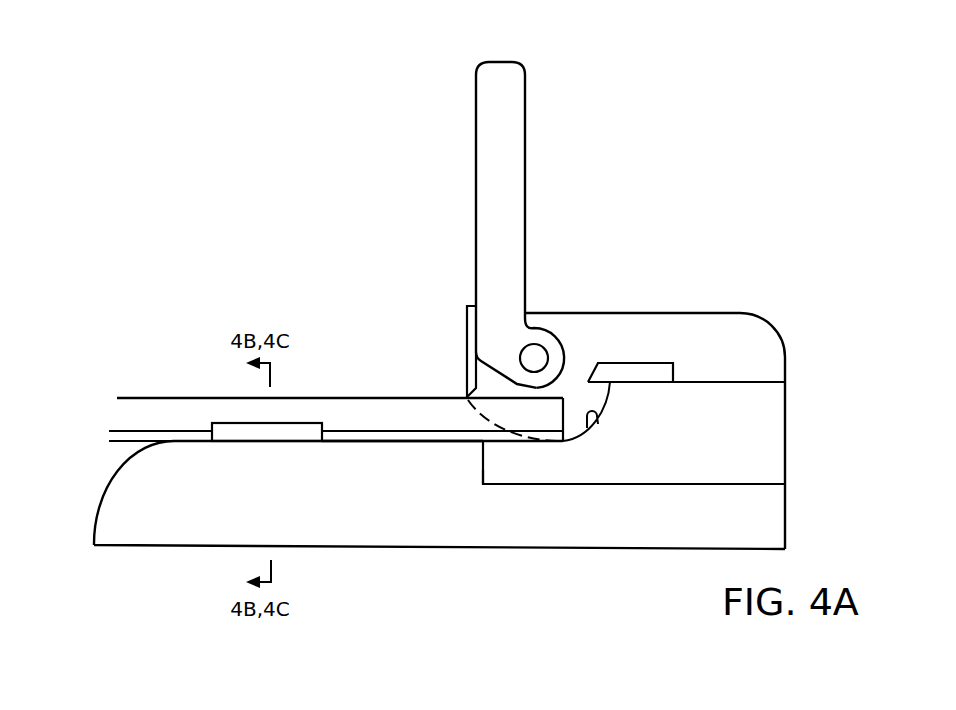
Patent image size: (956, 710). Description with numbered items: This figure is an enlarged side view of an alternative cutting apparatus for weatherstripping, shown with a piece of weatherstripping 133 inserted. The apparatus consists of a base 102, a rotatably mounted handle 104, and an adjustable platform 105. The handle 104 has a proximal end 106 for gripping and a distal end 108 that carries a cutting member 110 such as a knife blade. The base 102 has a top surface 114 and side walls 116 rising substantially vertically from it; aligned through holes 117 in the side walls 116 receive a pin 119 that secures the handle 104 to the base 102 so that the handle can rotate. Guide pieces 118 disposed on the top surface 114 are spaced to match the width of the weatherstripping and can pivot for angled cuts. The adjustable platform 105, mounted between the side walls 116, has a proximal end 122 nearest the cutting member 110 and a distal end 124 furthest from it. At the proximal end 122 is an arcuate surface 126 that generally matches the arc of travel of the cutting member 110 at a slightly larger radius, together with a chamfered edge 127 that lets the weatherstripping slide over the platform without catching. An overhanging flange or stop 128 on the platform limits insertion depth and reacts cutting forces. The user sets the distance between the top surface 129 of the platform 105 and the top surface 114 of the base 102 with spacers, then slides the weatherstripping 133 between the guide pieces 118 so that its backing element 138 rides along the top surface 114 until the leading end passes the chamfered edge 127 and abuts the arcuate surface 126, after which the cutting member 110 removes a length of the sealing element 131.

The base 102 is at (757, 527).
The rotatably mounted handle 104 is at (526, 98).
The adjustable platform 105 is at (762, 450).
The proximal end 106 is at (493, 60).
The distal end 108 is at (536, 386).
The cutting member 110 is at (456, 410).
The top surface 114 is at (352, 441).
The side walls 116 is at (723, 313).
The through holes 117 is at (534, 355).
The guide pieces 118 is at (228, 432).
The pin 119 is at (536, 358).
The proximal end 122 is at (483, 447).
The distal end 124 is at (785, 479).
The arcuate surface 126 is at (596, 413).
The chamfered edge 127 is at (487, 445).
The overhanging flange or stop 128 is at (638, 372).
The top surface 129 is at (764, 380).
The sealing element 131 is at (404, 412).
The weatherstripping 133 is at (162, 397).
The backing element 138 is at (127, 436).